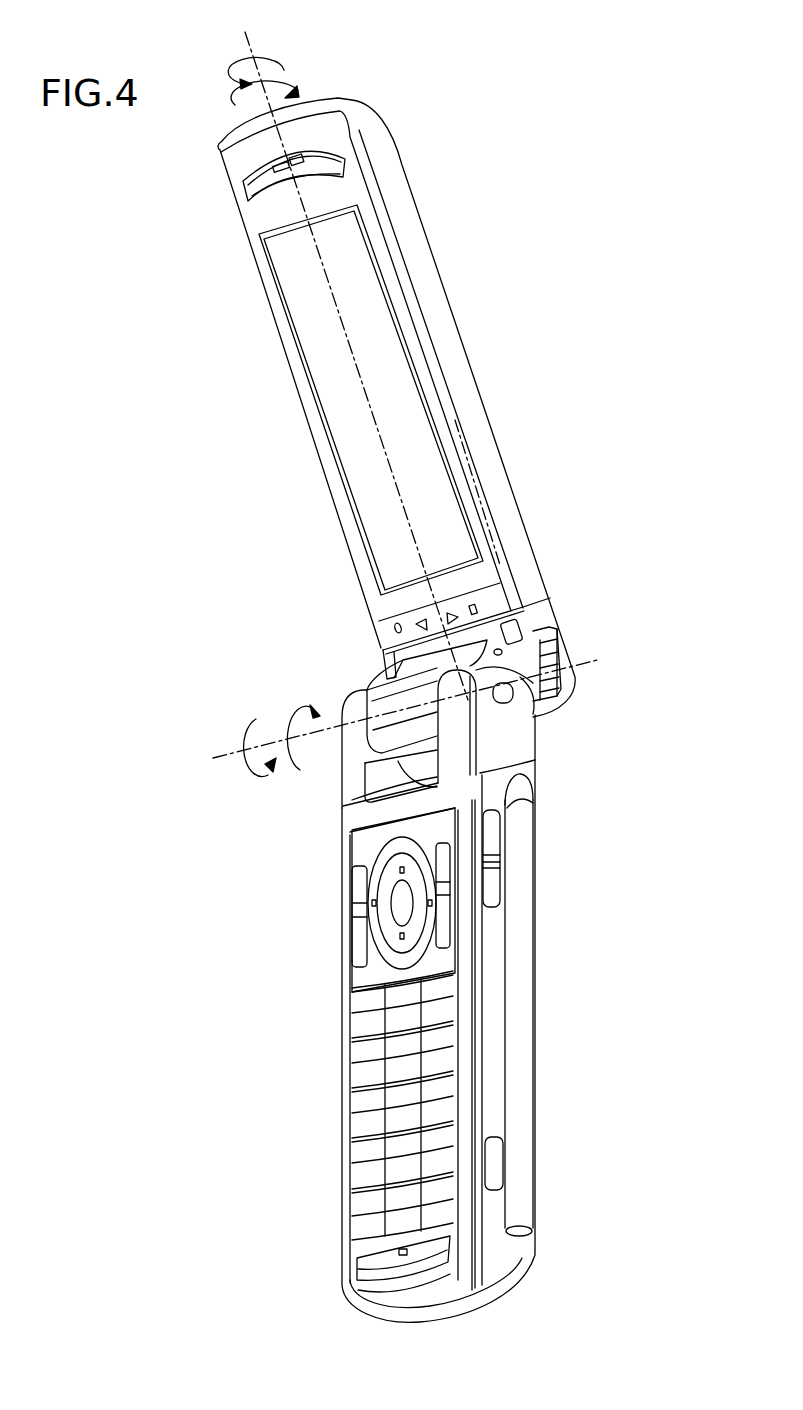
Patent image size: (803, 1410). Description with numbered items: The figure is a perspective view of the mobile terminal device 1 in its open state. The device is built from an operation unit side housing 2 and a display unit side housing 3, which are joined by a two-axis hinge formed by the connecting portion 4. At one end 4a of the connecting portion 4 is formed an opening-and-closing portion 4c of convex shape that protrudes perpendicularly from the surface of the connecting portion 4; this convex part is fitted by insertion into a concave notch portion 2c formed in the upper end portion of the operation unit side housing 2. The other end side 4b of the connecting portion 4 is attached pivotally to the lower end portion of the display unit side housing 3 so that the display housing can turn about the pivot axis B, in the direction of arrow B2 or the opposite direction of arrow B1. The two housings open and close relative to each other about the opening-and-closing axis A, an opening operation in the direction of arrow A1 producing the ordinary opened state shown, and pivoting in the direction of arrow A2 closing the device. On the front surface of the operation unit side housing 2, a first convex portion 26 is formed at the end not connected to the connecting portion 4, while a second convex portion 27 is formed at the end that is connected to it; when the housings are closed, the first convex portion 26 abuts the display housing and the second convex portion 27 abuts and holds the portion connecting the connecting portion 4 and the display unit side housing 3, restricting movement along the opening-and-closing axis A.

The mobile terminal device 1 is at (457, 94).
The operation unit side housing 2 is at (559, 969).
The notch portion 2c is at (480, 773).
The display unit side housing 3 is at (488, 342).
The connecting portion 4 is at (607, 685).
The one end of the connecting portion 4a is at (380, 720).
The another end side of the connecting portion 4b is at (483, 630).
The opening-and-closing portion 4c is at (397, 690).
The first convex portion 26 is at (360, 1266).
The second convex portion 27 is at (377, 788).
The opening-and-closing axis A is at (413, 703).
The arrow A1 is at (299, 728).
The arrow A2 is at (252, 739).
The pivot axis B is at (353, 361).
The arrow B1 is at (281, 88).
The arrow B2 is at (274, 66).